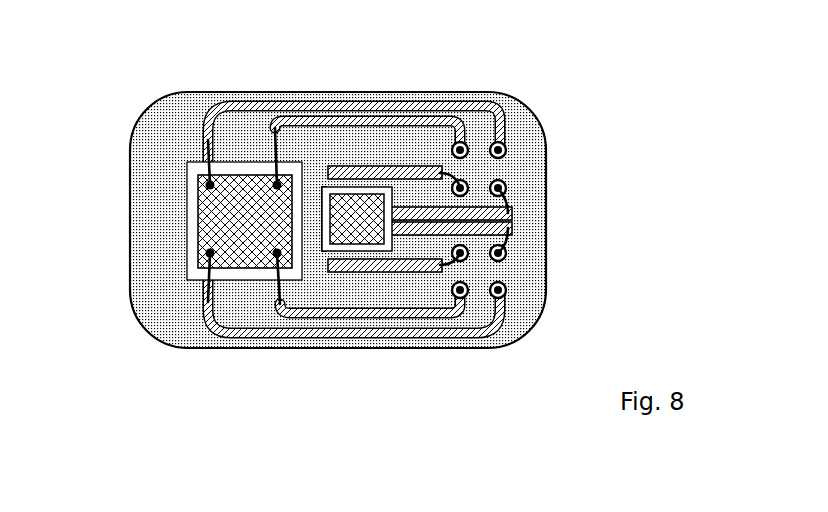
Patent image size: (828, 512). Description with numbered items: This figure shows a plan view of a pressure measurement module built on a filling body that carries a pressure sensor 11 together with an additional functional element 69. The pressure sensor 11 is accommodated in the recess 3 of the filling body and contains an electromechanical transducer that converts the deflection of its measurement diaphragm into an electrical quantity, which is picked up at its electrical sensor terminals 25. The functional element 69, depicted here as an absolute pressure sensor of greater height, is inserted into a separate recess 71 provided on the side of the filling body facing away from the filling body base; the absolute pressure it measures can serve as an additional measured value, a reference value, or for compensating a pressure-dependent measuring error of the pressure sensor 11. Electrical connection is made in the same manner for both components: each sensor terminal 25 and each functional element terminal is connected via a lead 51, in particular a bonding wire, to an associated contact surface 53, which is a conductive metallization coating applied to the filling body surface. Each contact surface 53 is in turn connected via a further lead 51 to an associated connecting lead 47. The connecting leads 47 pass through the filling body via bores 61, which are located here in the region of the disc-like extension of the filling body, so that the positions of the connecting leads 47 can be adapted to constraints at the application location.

The recess 3 is at (186, 210).
The pressure sensor 11 is at (244, 221).
The sensor terminals 25 is at (209, 181).
The connecting lead 47 is at (508, 153).
The lead 51 is at (206, 158).
The contact surface 53 is at (320, 120).
The bores 61 is at (508, 149).
The functional element 69 is at (357, 219).
The recess 71 is at (356, 188).